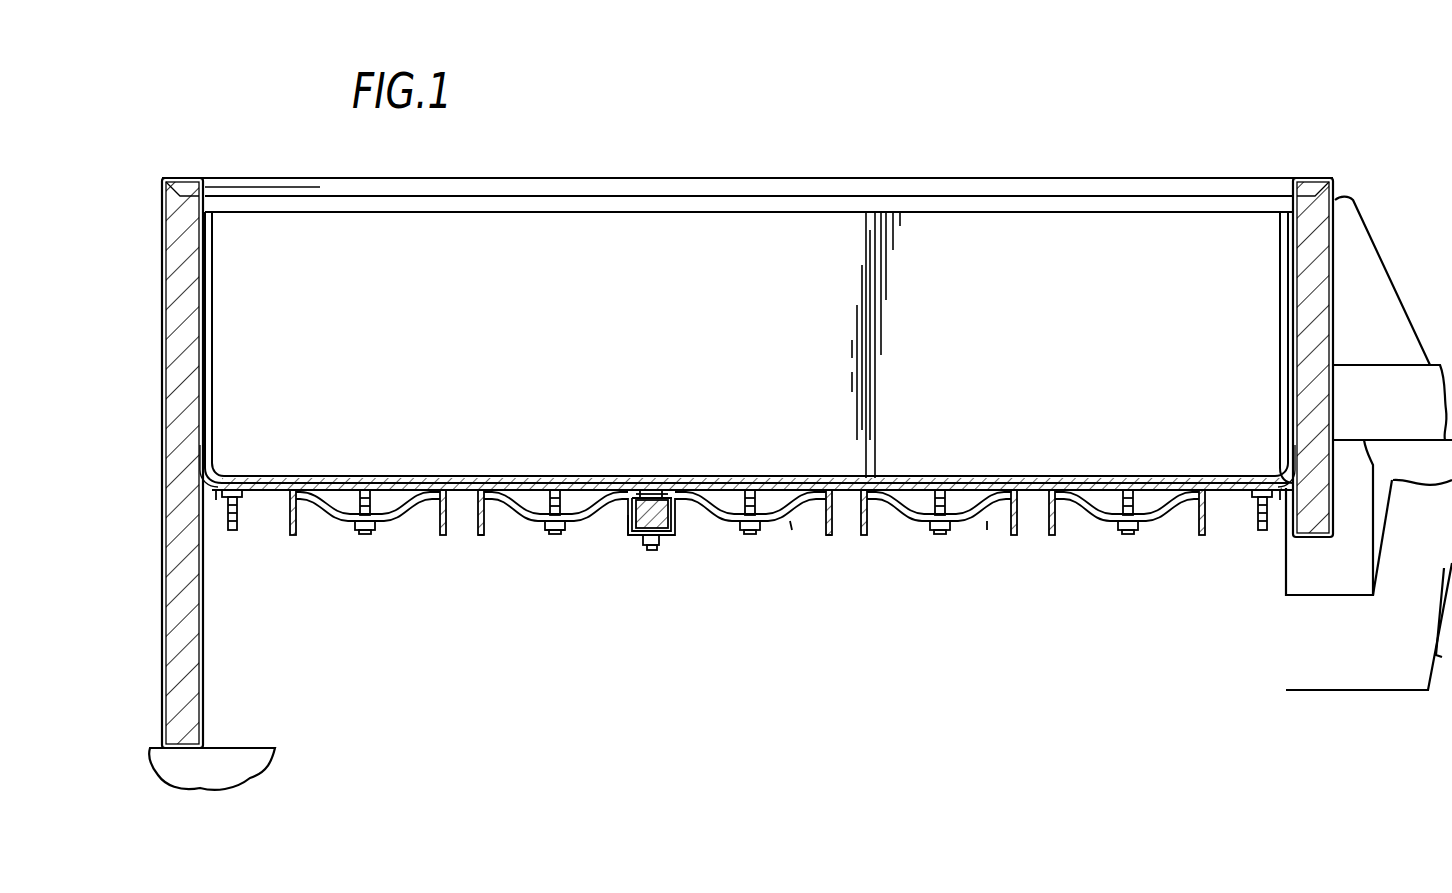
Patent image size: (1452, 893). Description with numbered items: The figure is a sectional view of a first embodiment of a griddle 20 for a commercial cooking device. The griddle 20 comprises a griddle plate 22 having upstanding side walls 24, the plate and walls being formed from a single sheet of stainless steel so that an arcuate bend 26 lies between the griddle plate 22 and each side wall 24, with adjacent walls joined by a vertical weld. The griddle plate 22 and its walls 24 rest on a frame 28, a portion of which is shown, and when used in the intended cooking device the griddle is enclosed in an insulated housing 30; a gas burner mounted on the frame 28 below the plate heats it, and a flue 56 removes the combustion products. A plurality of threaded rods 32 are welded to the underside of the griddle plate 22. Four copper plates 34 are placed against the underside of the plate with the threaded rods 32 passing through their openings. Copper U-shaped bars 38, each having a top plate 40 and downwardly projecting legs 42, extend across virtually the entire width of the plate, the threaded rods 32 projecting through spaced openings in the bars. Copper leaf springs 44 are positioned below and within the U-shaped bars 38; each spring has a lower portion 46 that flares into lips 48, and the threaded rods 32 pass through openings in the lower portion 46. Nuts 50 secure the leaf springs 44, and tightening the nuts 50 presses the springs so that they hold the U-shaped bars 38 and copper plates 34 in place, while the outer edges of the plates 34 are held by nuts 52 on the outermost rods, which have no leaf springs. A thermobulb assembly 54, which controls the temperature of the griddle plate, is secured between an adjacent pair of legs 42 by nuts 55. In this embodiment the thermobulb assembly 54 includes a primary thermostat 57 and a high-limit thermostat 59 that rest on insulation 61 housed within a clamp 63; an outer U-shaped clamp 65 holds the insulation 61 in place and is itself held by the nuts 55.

The griddle 20 is at (468, 612).
The griddle plate 22 is at (498, 478).
The side wall 24 is at (203, 262).
The arcuate bend 26 is at (222, 470).
The frame 28 is at (1350, 343).
The insulated housing 30 is at (150, 215).
The threaded rod 32 is at (238, 532).
The copper plate 34 is at (293, 488).
The U-shaped bar 38 is at (472, 532).
The top plate 40 is at (350, 489).
The leg 42 is at (302, 532).
The leaf spring 44 is at (715, 535).
The lower portion 46 is at (740, 538).
The lip 48 is at (792, 535).
The nut 50 is at (556, 535).
The nut 52 is at (220, 500).
The thermobulb assembly 54 is at (623, 546).
The nut 55 is at (650, 548).
The flue 56 is at (1334, 692).
The primary thermostat 57 is at (653, 478).
The high-limit thermostat 59 is at (667, 480).
The insulation 61 is at (686, 482).
The clamp 63 is at (625, 478).
The outer U-shaped clamp 65 is at (630, 525).